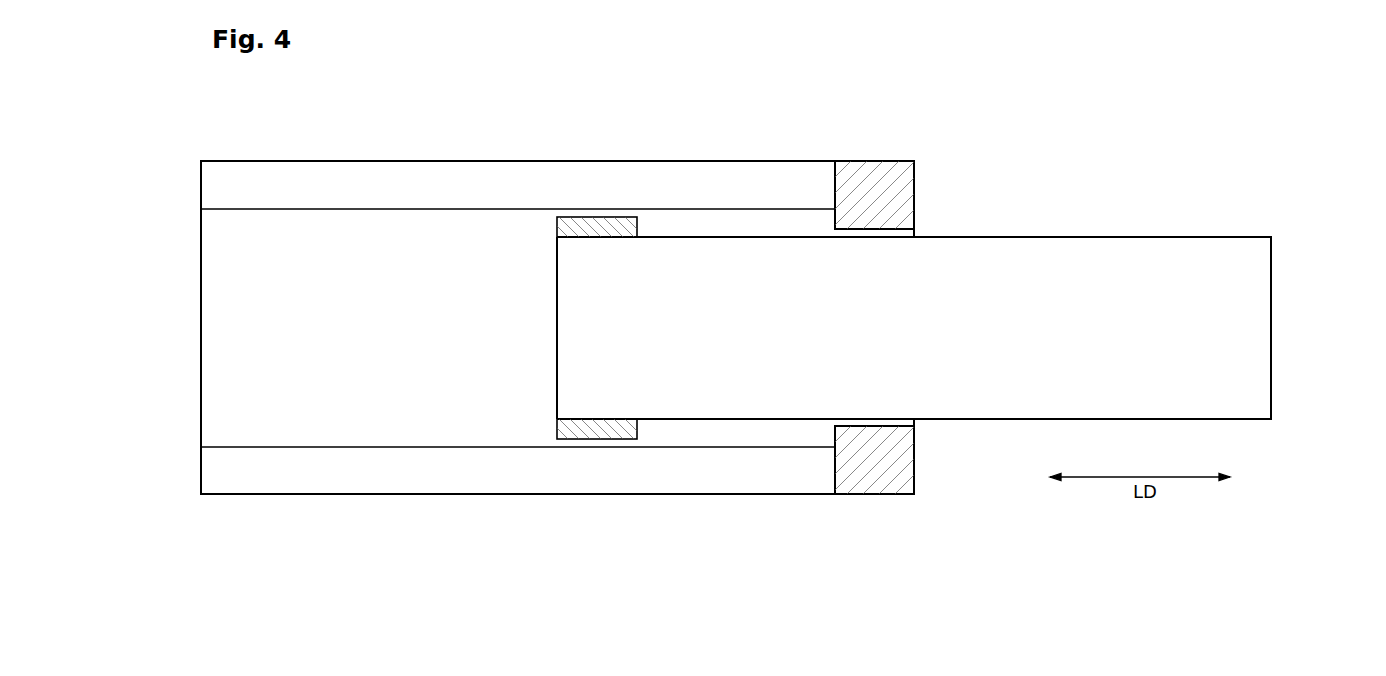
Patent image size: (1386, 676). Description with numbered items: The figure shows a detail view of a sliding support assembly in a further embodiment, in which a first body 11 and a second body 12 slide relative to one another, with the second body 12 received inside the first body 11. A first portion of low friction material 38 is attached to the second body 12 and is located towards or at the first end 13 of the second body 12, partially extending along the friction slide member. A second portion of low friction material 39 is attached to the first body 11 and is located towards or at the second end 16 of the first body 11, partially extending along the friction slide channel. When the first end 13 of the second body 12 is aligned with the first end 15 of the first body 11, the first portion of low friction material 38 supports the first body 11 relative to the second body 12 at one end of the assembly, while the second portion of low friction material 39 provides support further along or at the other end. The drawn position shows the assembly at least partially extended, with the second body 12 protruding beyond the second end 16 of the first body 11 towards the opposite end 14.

The first body 11 is at (313, 387).
The second body 12 is at (1205, 333).
The first end of the second body 13 is at (557, 279).
The outer end of piston rod 14 is at (1271, 262).
The first end of the first body 15 is at (201, 193).
The second end of the first body 16 is at (914, 195).
The first portion of low friction material 38 is at (607, 427).
The second portion of low friction material 39 is at (894, 478).